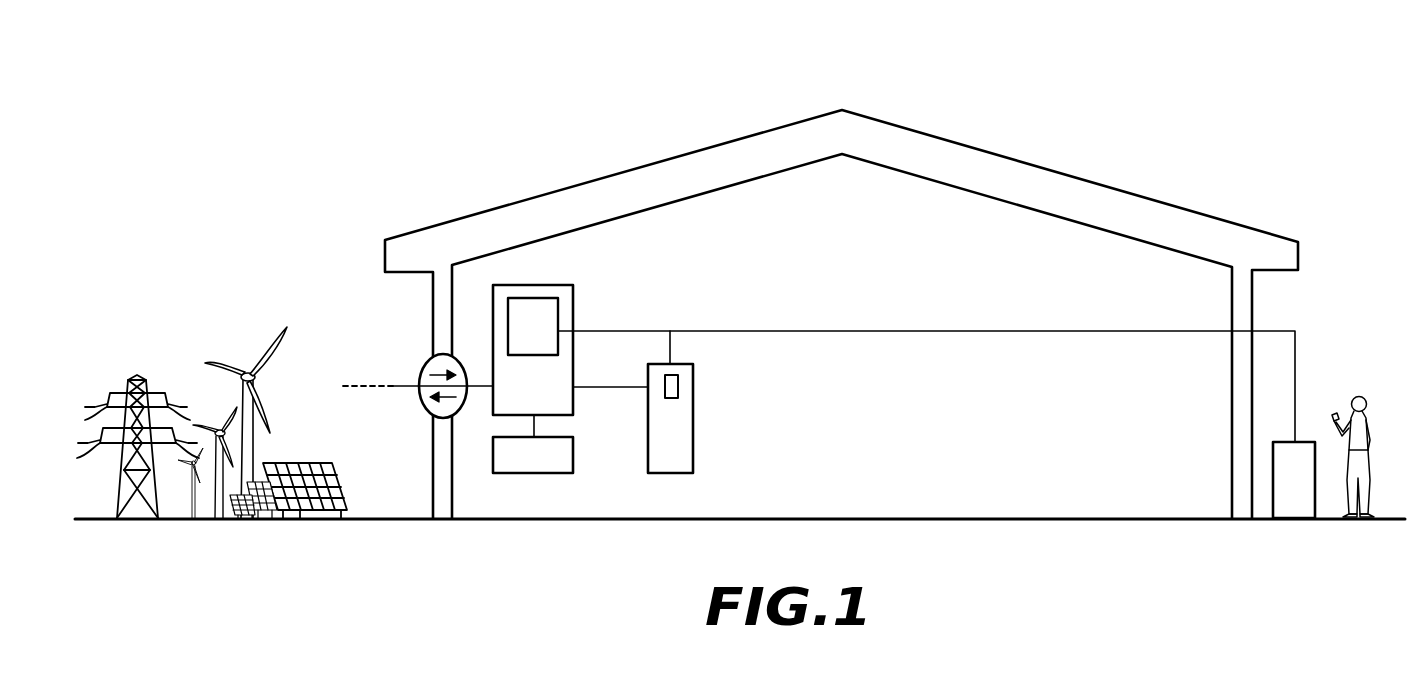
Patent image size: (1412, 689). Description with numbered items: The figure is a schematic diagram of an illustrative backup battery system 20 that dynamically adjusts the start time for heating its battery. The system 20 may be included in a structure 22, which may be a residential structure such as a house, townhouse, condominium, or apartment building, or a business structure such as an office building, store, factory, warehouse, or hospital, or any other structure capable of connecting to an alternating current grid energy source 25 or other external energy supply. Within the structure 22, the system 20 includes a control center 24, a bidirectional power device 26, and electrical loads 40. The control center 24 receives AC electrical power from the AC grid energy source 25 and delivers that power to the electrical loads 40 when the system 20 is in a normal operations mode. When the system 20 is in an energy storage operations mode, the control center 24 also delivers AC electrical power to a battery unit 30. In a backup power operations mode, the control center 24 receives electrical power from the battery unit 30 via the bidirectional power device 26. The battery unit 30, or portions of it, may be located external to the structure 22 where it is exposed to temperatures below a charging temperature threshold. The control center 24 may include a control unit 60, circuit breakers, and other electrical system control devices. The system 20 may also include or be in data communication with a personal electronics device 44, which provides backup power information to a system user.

The system 20 is at (1203, 109).
The structure 22 is at (603, 178).
The control center 24 is at (535, 285).
The alternating current (AC) grid energy source 25 is at (168, 336).
The bidirectional power device 26 is at (670, 475).
The battery unit 30 is at (1282, 487).
The electrical loads 40 is at (531, 475).
The personal electronics device (PED) 44 is at (1333, 417).
The control unit 60 is at (521, 338).